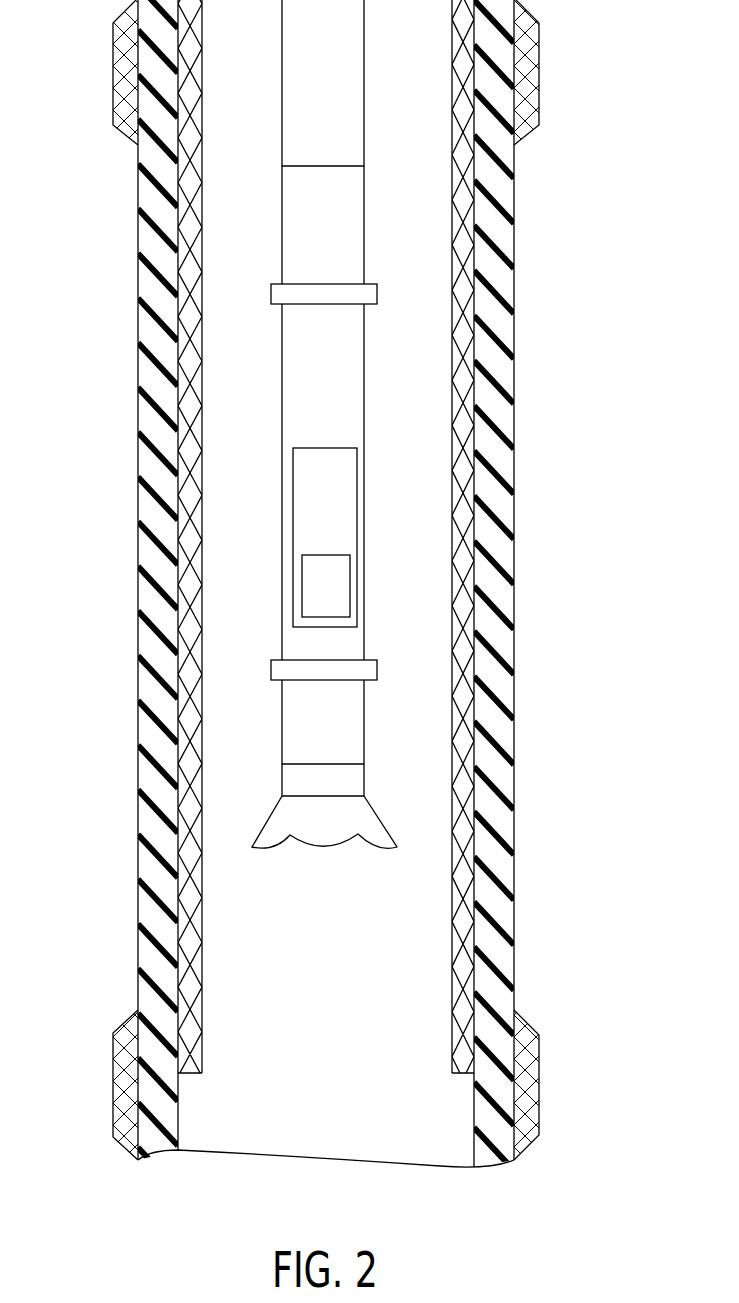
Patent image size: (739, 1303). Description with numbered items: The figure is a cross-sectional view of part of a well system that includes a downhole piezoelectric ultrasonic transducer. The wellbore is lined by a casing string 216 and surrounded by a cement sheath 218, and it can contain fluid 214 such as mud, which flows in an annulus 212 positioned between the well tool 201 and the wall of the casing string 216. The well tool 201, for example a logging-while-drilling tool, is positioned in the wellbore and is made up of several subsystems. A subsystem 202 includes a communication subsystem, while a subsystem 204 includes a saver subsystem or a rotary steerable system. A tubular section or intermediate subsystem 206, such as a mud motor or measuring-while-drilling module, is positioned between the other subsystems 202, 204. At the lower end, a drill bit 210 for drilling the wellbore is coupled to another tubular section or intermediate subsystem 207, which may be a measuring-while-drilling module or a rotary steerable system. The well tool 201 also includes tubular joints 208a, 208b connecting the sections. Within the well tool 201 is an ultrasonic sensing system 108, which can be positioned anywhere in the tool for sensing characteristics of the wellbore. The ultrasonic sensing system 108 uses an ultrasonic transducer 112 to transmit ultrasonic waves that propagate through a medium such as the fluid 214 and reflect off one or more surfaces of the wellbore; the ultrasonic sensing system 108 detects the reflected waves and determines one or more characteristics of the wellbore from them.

The well tool 201 is at (277, 98).
The subsystem 202 is at (330, 192).
The subsystem 204 is at (330, 732).
The intermediate subsystem 206 is at (328, 412).
The intermediate subsystem 207 is at (338, 781).
The tubular joint 208a is at (277, 307).
The tubular joint 208b is at (267, 668).
The drill bit 210 is at (347, 843).
The annulus 212 is at (228, 160).
The fluid 214 is at (427, 972).
The casing string 216 is at (192, 450).
The cement sheath 218 is at (167, 515).
The ultrasonic sensing system 108 is at (360, 537).
The ultrasonic transducer 112 is at (353, 587).